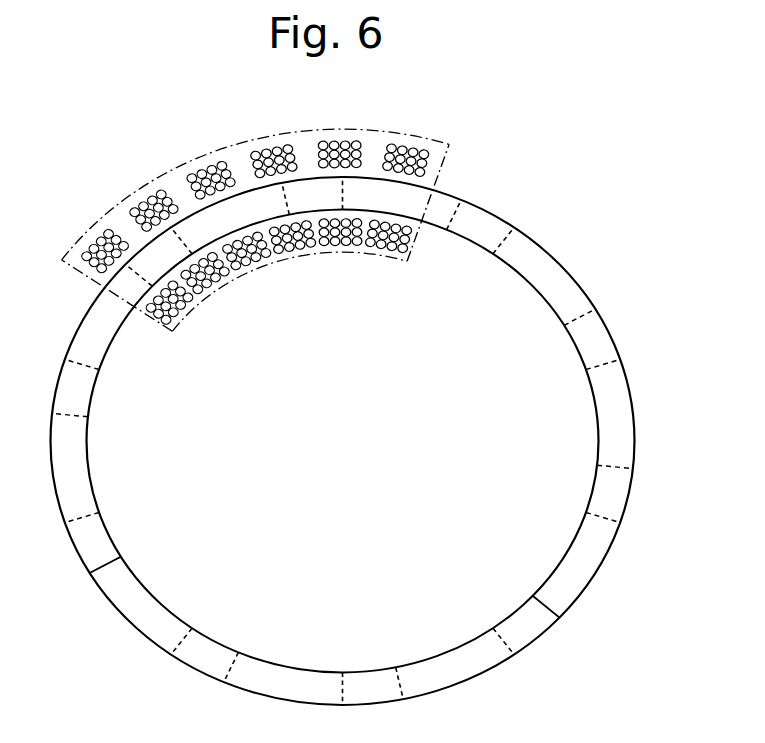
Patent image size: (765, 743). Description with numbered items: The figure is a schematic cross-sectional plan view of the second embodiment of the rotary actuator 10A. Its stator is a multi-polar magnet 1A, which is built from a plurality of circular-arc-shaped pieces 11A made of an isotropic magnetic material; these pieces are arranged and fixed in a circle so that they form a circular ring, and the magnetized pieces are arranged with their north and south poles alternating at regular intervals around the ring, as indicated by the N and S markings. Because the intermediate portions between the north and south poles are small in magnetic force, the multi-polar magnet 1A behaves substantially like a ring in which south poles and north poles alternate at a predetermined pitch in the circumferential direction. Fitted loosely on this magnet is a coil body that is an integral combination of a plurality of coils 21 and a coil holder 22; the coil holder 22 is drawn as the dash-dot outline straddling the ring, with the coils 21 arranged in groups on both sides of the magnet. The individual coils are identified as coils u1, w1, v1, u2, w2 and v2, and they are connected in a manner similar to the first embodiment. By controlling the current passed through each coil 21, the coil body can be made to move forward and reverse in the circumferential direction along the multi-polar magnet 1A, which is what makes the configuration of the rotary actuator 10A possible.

The rotary actuator 10A is at (670, 160).
The multi-polar magnet 1A is at (572, 278).
The circular-arc-shaped piece 11A is at (635, 393).
The coil holder 22 is at (310, 208).
The coil 21 is at (300, 250).
The coil u1 is at (92, 243).
The coil v1 is at (213, 170).
The coil w1 is at (150, 200).
The coil u2 is at (282, 150).
The coil v2 is at (413, 150).
The coil w2 is at (340, 142).